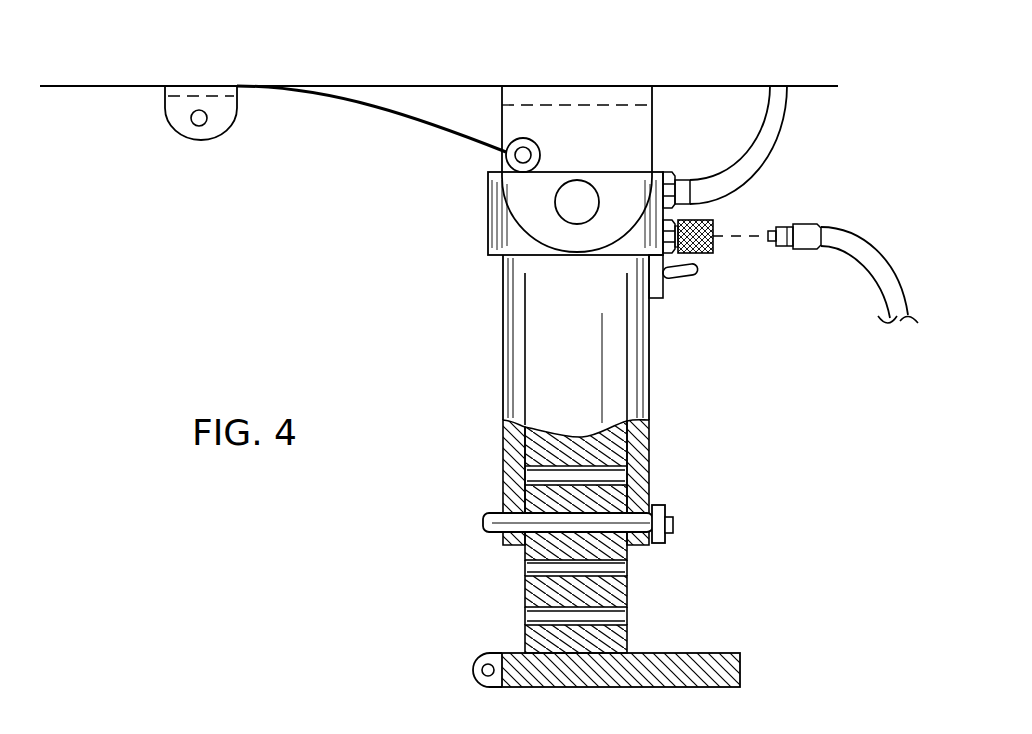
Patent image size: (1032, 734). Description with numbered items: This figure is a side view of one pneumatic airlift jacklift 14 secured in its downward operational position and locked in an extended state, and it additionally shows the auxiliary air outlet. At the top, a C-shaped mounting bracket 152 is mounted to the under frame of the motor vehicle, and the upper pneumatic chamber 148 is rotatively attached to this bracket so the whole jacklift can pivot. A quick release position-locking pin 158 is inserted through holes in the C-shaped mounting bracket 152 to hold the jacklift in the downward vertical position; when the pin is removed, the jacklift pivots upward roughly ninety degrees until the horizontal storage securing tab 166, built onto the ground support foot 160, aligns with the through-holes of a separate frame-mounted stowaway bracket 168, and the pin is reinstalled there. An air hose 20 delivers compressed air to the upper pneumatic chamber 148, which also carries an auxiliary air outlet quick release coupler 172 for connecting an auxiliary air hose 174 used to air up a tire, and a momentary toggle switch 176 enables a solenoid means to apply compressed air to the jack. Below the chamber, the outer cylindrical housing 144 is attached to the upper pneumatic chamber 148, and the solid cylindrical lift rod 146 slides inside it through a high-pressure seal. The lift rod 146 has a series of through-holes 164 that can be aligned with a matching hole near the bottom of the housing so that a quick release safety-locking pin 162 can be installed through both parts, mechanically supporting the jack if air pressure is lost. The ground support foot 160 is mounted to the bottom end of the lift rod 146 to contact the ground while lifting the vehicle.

The jacklift 14 is at (350, 366).
The air hose 20 is at (777, 147).
The outer cylindrical housing 144 is at (650, 397).
The solid cylindrical lift rod 146 is at (627, 597).
The upper pneumatic chamber 148 is at (487, 217).
The C-shaped mounting bracket 152 is at (570, 112).
The quick release position-locking pin 158 is at (505, 155).
The ground support foot 160 is at (742, 667).
The quick release safety-locking pin 162 is at (673, 522).
The through-holes 164 is at (524, 566).
The horizontal storage securing tab 166 is at (475, 657).
The stowaway bracket 168 is at (198, 86).
The auxiliary air outlet quick release coupler 172 is at (713, 247).
The auxiliary air hose 174 is at (866, 250).
The momentary toggle switch 176 is at (689, 283).